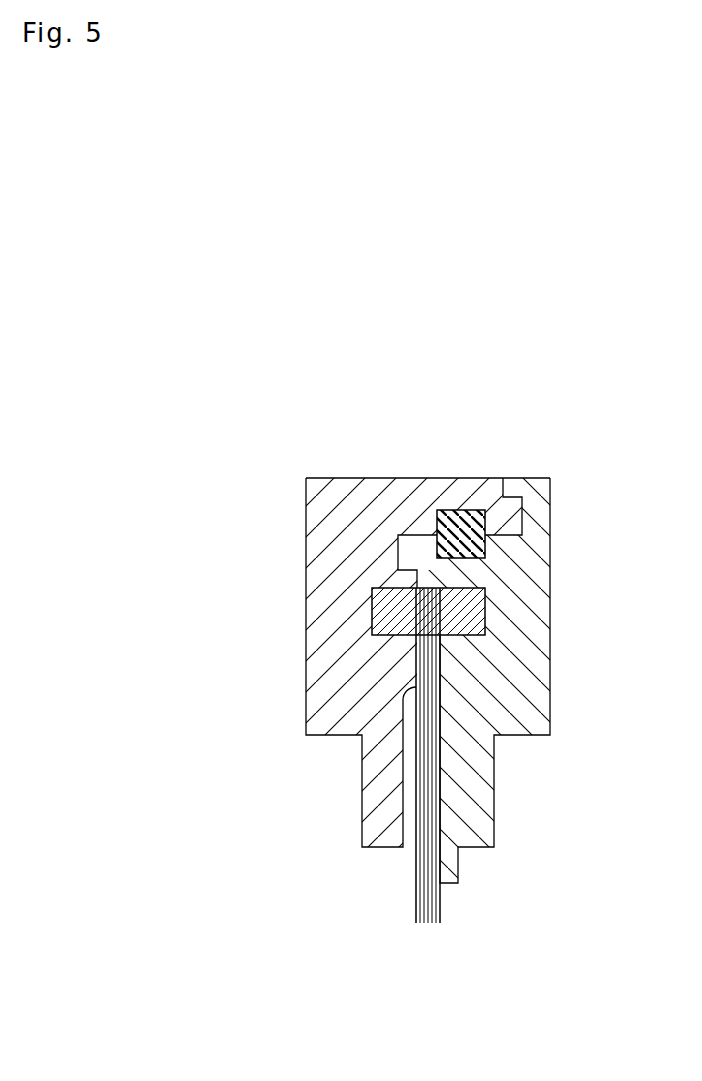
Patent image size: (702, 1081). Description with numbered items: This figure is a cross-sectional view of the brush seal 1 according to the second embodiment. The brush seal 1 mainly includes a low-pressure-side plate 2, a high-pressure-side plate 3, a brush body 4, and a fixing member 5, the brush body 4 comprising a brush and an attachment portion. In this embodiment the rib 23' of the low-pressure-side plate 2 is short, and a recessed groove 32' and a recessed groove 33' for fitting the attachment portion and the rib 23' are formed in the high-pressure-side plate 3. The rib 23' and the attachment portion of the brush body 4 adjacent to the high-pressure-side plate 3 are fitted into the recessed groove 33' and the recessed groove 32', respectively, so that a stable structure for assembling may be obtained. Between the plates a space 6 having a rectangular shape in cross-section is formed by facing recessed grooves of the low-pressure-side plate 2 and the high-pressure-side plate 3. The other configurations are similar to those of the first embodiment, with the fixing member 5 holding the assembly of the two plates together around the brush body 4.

The brush seal 1 is at (548, 442).
The low-pressure-side plate 2 is at (535, 668).
The high-pressure-side plate 3 is at (320, 664).
The brush body 4 is at (452, 687).
The fixing member 5 is at (463, 525).
The space 6 is at (450, 520).
The rib 23' is at (381, 488).
The recessed groove 32' is at (506, 613).
The recessed groove 33' is at (524, 564).